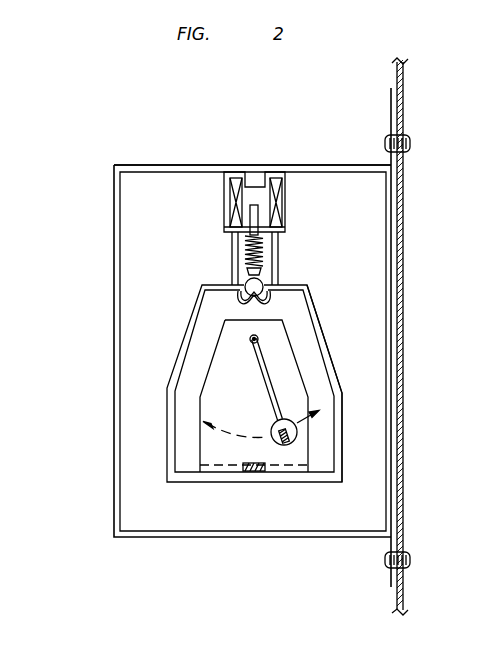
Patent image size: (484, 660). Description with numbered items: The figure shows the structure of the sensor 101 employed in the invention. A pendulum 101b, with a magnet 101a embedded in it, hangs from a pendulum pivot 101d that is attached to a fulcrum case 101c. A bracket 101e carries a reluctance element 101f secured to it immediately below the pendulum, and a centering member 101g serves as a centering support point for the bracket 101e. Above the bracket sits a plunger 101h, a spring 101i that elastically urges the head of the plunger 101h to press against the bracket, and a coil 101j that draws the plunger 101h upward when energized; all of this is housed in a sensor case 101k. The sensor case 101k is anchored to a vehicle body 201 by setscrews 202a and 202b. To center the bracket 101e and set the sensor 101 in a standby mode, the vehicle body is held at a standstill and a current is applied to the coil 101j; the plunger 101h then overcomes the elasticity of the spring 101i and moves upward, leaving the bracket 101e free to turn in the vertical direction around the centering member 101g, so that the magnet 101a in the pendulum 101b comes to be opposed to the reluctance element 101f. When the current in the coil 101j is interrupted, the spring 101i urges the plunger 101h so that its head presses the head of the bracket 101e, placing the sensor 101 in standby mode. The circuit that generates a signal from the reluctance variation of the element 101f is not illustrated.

The sensor 101 is at (97, 278).
The magnet 101a is at (288, 444).
The pendulum 101b is at (275, 393).
The fulcrum case 101c is at (207, 373).
The pendulum pivot 101d is at (250, 338).
The bracket 101e is at (323, 340).
The reluctance element 101f is at (256, 471).
The centering member 101g is at (238, 304).
The plunger 101h is at (258, 218).
The spring 101i is at (268, 250).
The coil 101j is at (230, 205).
The sensor case 101k is at (287, 165).
The vehicle body 201 is at (407, 465).
The setscrew 202a is at (410, 143).
The setscrew 202b is at (410, 558).